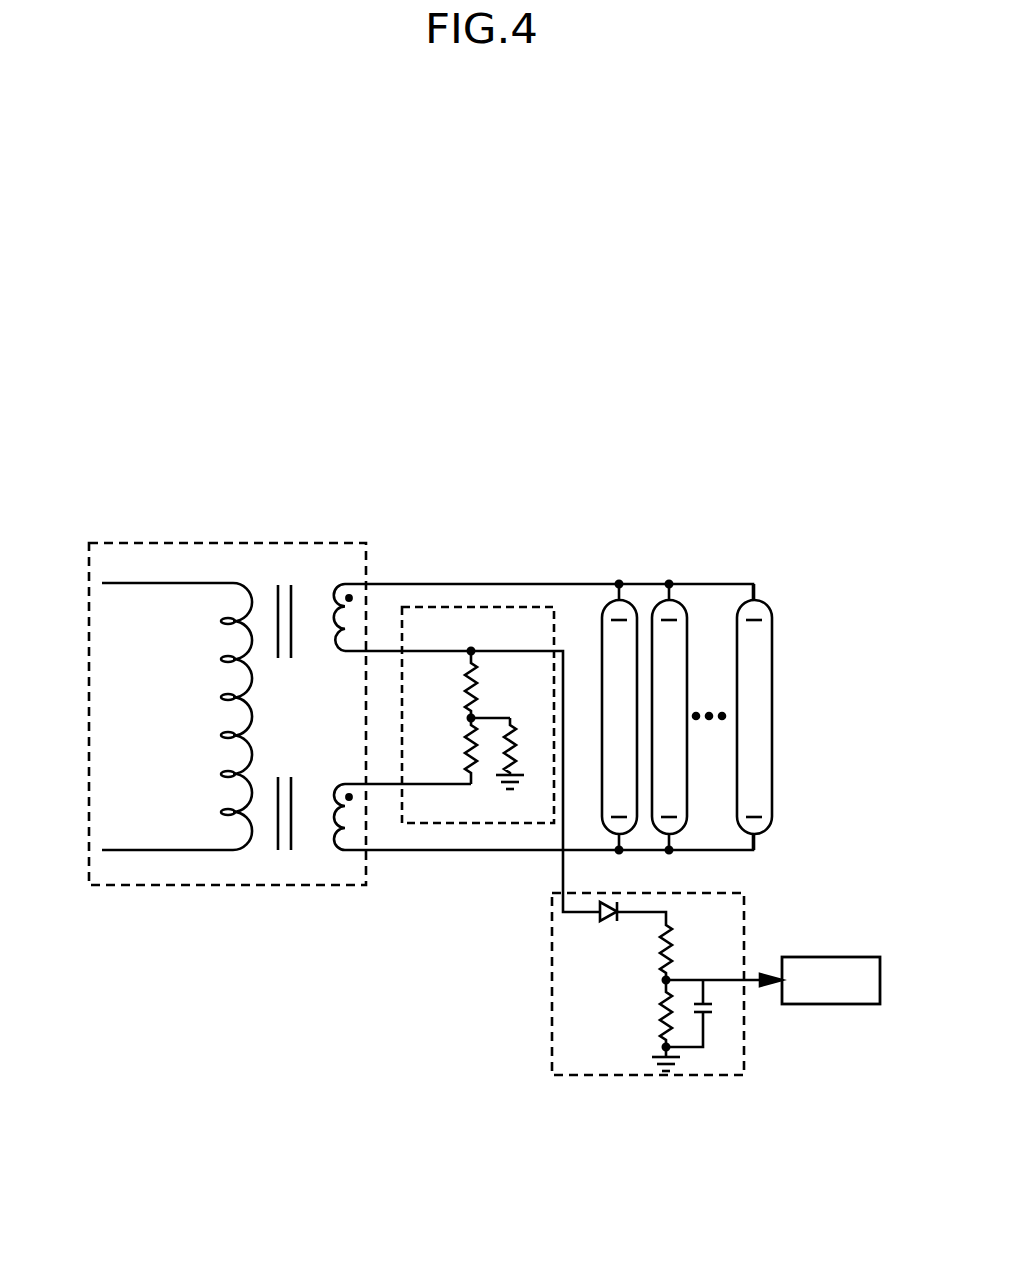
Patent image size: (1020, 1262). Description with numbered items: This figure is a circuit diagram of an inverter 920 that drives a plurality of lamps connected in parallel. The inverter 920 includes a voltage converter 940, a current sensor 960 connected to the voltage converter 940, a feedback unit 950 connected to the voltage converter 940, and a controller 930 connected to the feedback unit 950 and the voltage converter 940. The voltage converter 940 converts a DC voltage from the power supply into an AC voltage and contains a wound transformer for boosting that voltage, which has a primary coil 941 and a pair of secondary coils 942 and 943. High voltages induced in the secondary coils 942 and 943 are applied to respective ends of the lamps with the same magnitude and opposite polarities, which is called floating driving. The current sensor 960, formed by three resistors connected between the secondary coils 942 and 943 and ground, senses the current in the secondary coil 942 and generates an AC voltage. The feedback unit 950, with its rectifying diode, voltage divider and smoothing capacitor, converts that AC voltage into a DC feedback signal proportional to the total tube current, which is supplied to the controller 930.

The inverter 920 is at (528, 453).
The controller 930 is at (838, 993).
The voltage converter 940 is at (170, 543).
The primary coil 941 is at (233, 583).
The secondary coil 942 is at (338, 583).
The secondary coil 943 is at (337, 853).
The feedback unit 950 is at (647, 1076).
The current sensor 960 is at (482, 607).